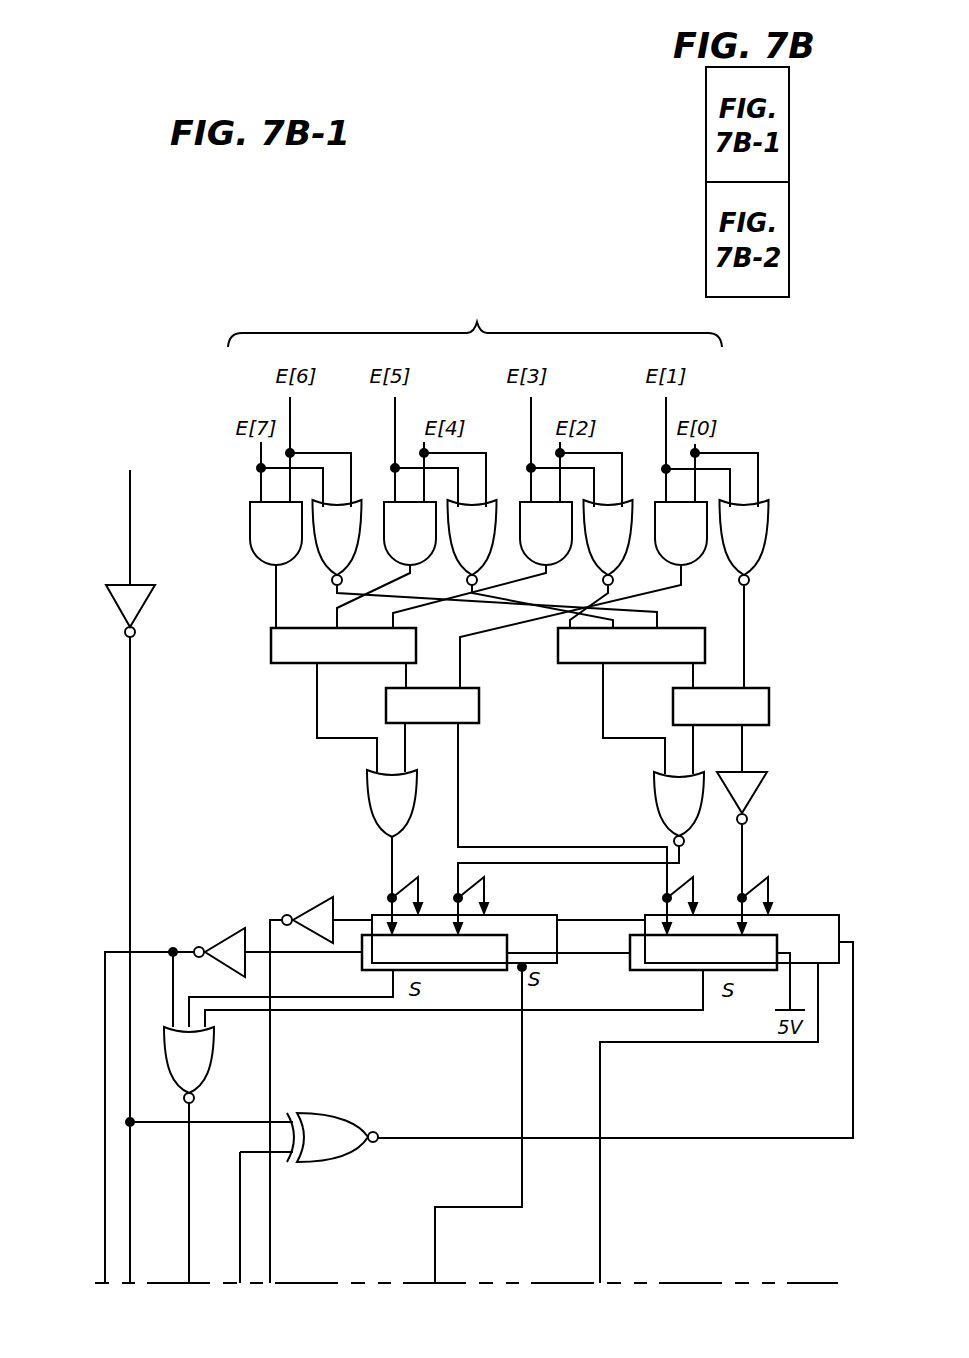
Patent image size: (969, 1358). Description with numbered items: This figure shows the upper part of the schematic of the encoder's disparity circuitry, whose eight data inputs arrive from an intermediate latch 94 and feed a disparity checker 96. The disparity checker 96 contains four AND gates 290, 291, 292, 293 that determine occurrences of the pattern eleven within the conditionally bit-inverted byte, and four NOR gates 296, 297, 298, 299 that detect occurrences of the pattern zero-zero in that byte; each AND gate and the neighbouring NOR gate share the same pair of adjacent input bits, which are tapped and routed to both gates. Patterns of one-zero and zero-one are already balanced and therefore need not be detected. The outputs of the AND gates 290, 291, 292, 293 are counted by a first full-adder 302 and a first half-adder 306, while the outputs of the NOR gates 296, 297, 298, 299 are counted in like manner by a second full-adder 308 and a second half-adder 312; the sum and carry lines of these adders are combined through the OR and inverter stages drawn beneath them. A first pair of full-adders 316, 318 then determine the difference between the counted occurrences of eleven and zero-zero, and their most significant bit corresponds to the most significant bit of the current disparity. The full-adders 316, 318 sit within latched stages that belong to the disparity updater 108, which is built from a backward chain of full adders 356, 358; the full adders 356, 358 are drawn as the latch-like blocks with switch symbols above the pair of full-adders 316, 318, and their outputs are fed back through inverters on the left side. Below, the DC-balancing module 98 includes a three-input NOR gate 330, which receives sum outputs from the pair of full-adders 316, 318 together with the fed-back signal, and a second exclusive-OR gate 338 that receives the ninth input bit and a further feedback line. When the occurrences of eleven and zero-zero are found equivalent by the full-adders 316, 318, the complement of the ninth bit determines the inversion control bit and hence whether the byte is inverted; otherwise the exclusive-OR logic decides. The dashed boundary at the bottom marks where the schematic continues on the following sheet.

The intermediate latch 94 is at (475, 319).
The disparity checker 96 is at (788, 523).
The DC-balancing module 98 is at (98, 889).
The disparity updater 108 is at (92, 1028).
The AND gate 290 is at (296, 568).
The AND gate 291 is at (432, 558).
The AND gate 292 is at (566, 563).
The AND gate 293 is at (700, 567).
The NOR gate 296 is at (363, 543).
The NOR gate 297 is at (494, 547).
The NOR gate 298 is at (628, 547).
The NOR gate 299 is at (758, 567).
The first full-adder 302 is at (337, 665).
The first half-adder 306 is at (470, 725).
The second full-adder 308 is at (580, 663).
The second half-adder 312 is at (758, 725).
The full-adder 316 is at (628, 964).
The full-adder 318 is at (362, 966).
The three-input NOR gate 330 is at (214, 1063).
The second exclusive-OR gate 338 is at (330, 1110).
The full adder 356 is at (783, 915).
The full adder 358 is at (377, 916).